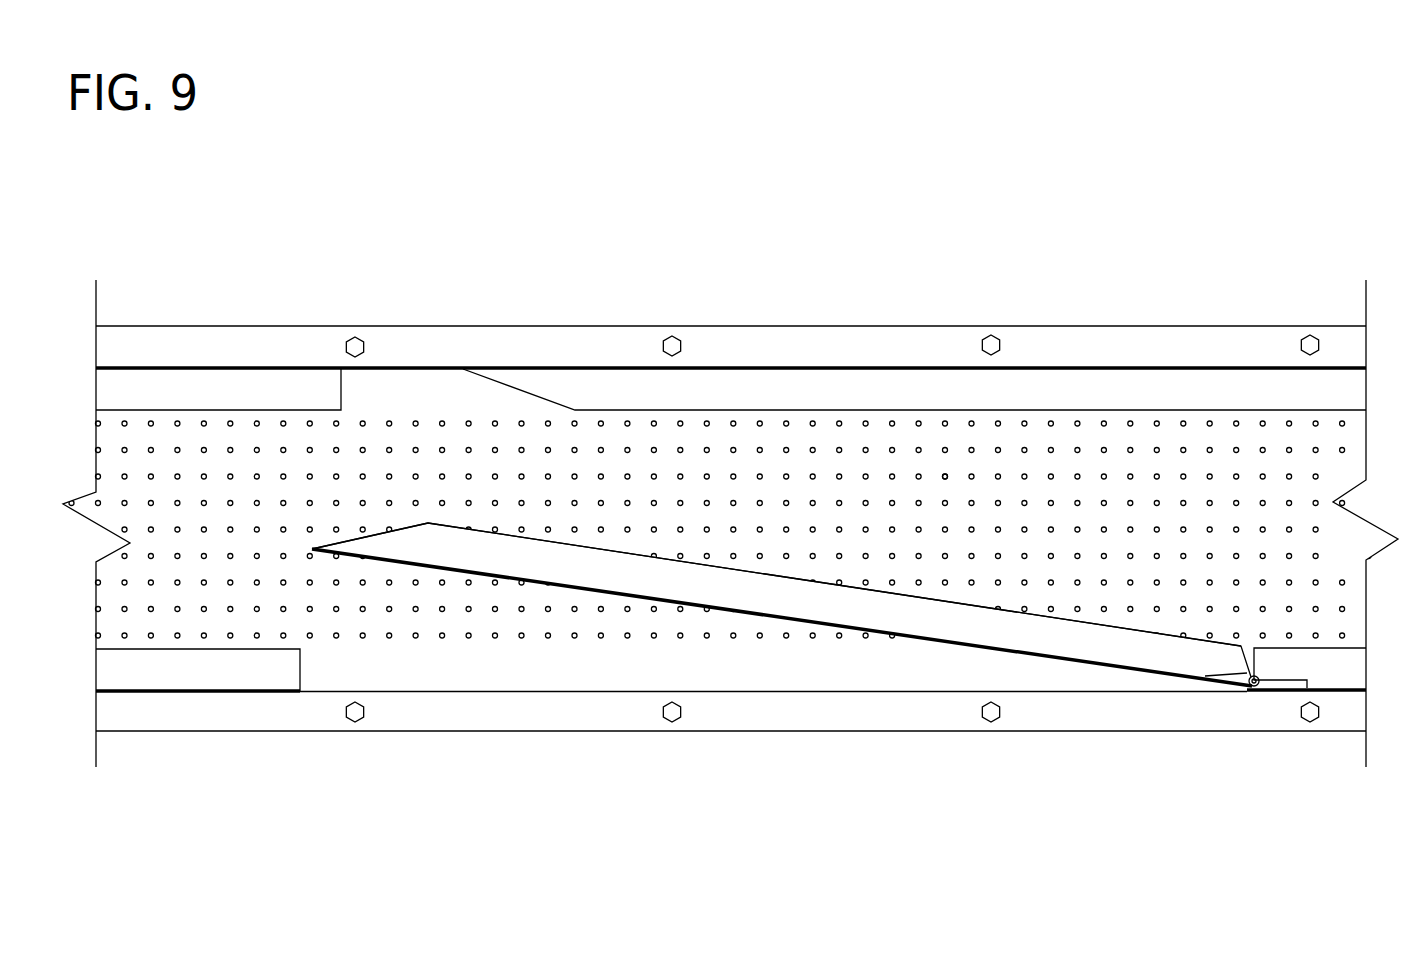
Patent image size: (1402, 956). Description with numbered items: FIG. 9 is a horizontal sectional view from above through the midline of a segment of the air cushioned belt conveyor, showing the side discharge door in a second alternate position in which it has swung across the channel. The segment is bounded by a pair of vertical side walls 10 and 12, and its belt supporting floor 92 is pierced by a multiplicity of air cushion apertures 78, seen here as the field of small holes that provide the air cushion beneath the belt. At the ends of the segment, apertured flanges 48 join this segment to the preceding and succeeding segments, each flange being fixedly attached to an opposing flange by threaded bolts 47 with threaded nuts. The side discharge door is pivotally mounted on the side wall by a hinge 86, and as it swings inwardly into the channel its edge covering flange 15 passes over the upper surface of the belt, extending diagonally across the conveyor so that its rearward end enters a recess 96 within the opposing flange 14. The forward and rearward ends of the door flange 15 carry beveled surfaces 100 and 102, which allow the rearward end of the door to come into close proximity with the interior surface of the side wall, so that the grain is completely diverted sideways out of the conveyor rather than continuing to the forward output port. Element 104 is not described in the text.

The side wall 10 is at (182, 692).
The side wall 12 is at (828, 368).
The opposing flange 14 is at (1070, 388).
The edge covering flange 15 is at (1018, 633).
The threaded bolt 47 is at (672, 346).
The apertured flange 48 is at (502, 350).
The air cushion aperture 78 is at (944, 475).
The hinge 86 is at (1257, 687).
The belt supporting floor 92 is at (1195, 470).
The recess 96 is at (390, 405).
The beveled surface 100 is at (369, 536).
The beveled surface 102 is at (1242, 648).
The lower beam 104 is at (584, 673).